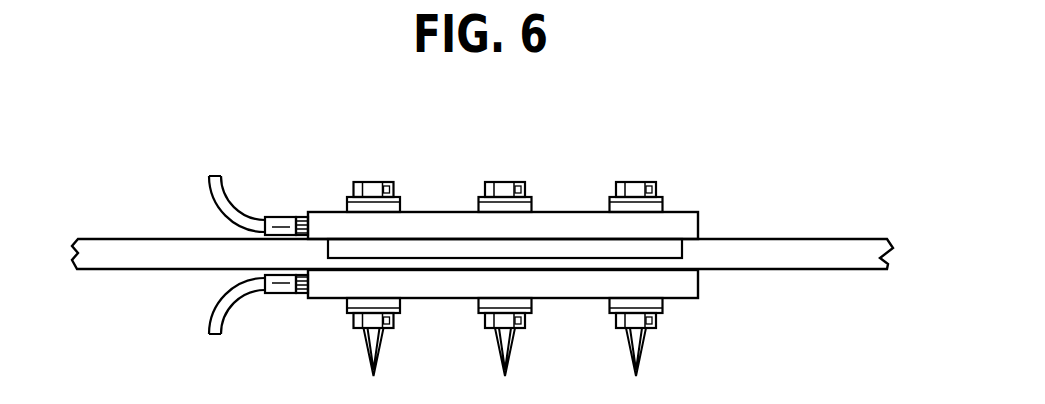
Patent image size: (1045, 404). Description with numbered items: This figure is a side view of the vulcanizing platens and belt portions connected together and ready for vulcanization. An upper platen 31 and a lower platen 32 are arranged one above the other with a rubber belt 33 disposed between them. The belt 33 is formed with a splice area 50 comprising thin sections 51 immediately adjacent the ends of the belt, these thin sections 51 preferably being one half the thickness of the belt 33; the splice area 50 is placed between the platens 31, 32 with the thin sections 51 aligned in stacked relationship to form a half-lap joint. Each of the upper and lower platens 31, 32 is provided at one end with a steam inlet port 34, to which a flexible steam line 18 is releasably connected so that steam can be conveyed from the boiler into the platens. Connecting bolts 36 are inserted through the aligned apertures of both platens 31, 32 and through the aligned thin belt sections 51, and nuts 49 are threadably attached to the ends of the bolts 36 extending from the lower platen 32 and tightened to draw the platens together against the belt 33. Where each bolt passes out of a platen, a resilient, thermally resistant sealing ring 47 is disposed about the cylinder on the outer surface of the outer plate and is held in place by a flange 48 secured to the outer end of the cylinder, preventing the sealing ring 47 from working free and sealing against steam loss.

The flexible steam lines 18 is at (210, 191).
The upper platen 31 is at (703, 211).
The lower platen 32 is at (703, 293).
The rubber belt 33 is at (110, 253).
The steam inlet port 34 is at (282, 216).
The connecting bolts 36 is at (371, 182).
The sealing ring 47 is at (655, 207).
The flange 48 is at (612, 198).
The nuts 49 is at (657, 322).
The splice area 50 is at (429, 258).
The thin sections 51 is at (562, 250).